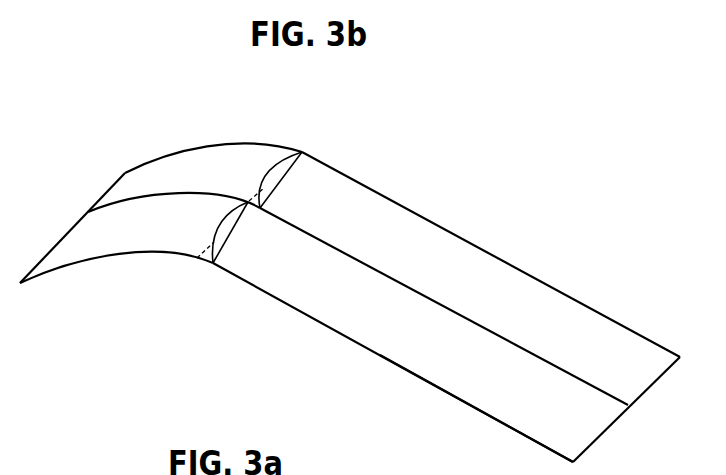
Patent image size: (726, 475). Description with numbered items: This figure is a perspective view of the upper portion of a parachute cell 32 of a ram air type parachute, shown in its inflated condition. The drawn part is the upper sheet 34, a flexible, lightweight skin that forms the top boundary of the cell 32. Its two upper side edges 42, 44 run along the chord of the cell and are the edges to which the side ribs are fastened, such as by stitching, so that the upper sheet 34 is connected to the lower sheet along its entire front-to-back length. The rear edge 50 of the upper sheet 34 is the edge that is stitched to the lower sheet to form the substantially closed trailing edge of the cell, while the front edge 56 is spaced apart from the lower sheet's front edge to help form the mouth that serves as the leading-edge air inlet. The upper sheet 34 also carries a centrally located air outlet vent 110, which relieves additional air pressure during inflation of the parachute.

The parachute cell 32 is at (278, 342).
The upper sheet 34 is at (452, 373).
The upper side edge 42 is at (507, 428).
The upper side edge 44 is at (580, 302).
The rear edge 50 is at (598, 437).
The front edge 56 is at (95, 204).
The air outlet vent 110 is at (225, 243).